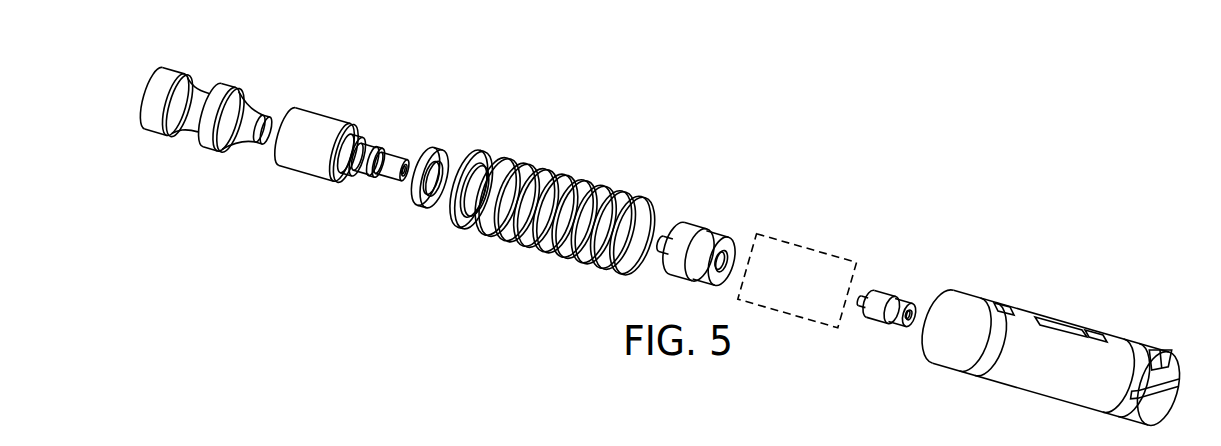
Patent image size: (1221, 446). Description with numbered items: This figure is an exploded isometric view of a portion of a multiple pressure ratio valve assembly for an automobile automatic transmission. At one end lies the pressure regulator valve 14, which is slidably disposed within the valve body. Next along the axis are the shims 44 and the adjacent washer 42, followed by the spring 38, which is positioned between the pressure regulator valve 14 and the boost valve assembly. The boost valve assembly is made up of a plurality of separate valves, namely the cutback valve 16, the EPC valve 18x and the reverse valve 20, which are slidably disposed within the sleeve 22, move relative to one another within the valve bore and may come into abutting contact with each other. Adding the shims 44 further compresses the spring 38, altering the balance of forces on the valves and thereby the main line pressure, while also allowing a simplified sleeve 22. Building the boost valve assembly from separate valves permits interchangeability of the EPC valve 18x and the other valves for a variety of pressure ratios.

The pressure regulator valve 14 is at (220, 92).
The cutback valve 16 is at (685, 230).
The EPC valve 18x is at (810, 248).
The reverse valve 20 is at (888, 293).
The sleeve 22 is at (1030, 308).
The spring 38 is at (560, 177).
The washer 42 is at (482, 150).
The shims 44 is at (434, 150).